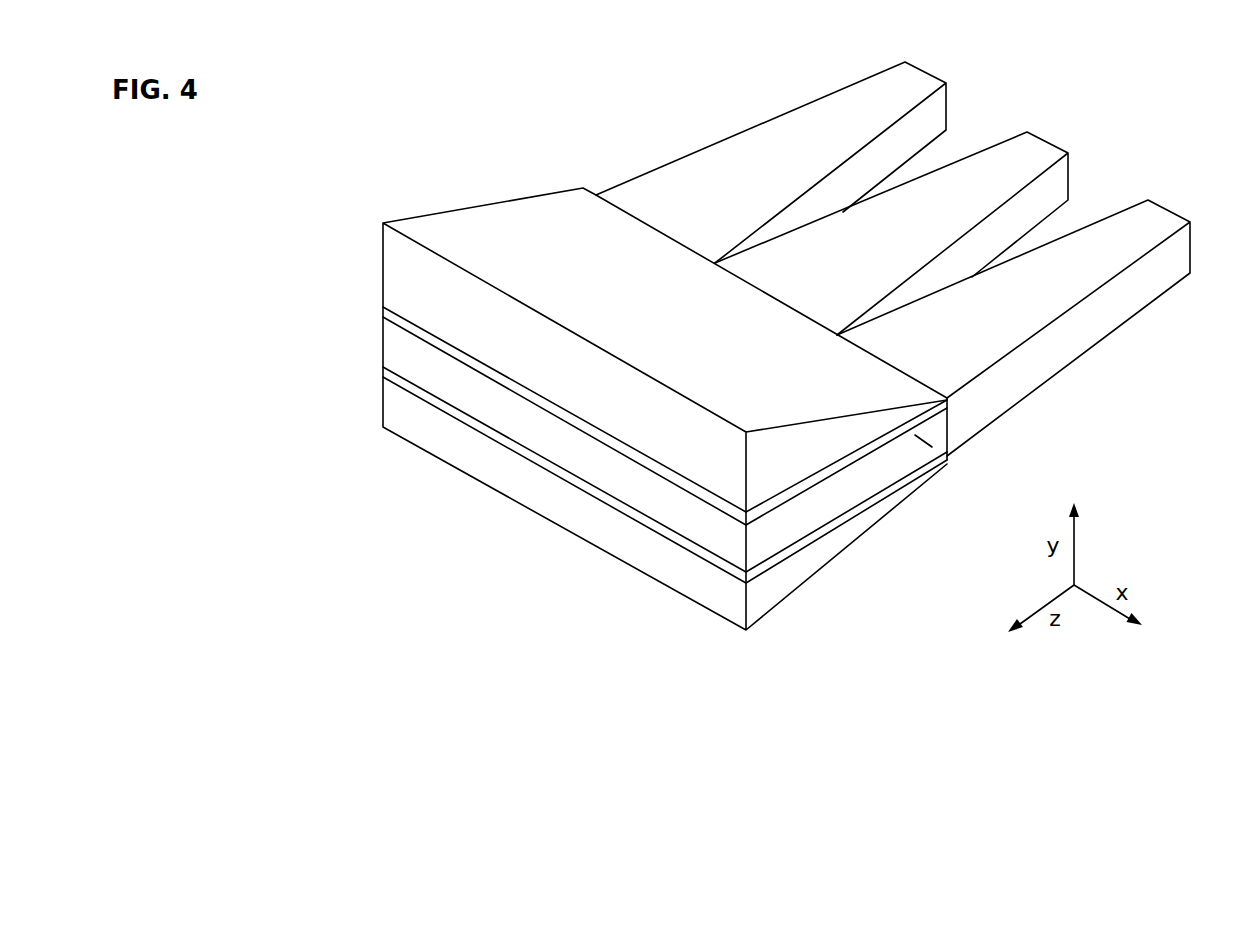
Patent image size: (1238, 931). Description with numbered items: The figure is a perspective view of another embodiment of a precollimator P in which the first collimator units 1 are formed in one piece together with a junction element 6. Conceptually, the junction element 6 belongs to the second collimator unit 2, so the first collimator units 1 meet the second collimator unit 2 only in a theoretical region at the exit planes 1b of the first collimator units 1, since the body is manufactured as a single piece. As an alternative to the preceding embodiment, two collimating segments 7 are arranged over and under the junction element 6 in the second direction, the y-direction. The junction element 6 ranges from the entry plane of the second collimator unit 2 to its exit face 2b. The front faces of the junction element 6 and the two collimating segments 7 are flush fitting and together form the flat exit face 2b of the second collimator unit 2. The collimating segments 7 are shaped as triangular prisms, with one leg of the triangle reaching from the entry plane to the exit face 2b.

The first collimator unit 1 is at (712, 146).
The exit plane of first collimator unit 1b is at (948, 435).
The second collimator unit 2 is at (358, 395).
The exit face of second collimator unit 2b is at (478, 452).
The junction element 6 is at (895, 463).
The collimating segment 7 is at (497, 204).
The precollimator P is at (577, 140).